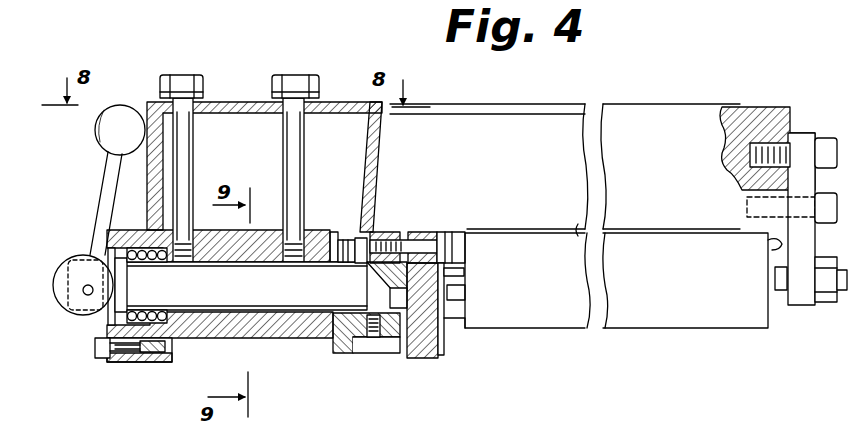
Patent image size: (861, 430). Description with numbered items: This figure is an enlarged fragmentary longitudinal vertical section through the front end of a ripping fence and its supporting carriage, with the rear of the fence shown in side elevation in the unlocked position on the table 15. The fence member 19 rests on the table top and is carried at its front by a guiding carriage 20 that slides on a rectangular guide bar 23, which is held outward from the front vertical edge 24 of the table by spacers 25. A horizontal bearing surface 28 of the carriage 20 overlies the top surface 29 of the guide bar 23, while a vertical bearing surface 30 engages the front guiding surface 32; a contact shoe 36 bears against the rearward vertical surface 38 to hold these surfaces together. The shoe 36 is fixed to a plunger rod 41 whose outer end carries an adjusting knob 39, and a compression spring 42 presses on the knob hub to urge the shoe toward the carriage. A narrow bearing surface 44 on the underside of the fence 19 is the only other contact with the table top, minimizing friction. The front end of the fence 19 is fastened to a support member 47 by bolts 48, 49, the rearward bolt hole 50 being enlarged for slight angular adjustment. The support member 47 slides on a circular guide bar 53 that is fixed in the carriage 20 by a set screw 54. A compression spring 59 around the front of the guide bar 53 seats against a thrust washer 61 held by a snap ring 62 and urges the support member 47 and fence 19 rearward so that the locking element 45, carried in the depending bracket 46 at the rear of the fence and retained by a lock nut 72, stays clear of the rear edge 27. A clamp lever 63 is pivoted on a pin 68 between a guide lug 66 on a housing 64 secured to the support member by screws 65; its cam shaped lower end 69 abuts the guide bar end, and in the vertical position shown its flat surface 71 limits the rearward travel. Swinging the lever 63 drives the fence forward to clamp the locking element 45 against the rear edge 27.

The table 15 is at (641, 326).
The fence member 19 is at (540, 106).
The guiding carriage 20 is at (350, 236).
The guide bar 23 is at (426, 358).
The front vertical edge 24 is at (462, 320).
The spacers 25 is at (465, 293).
The rear edge 27 is at (770, 244).
The horizontal bearing surface 28 is at (450, 272).
The top surface 29 is at (376, 283).
The vertical bearing surface 30 is at (396, 280).
The front guiding surface 32 is at (400, 342).
The contact shoe 36 is at (446, 234).
The rearward vertical surface 38 is at (444, 345).
The adjusting knob 39 is at (346, 265).
The plunger rod 41 is at (411, 240).
The compression spring 42 is at (385, 240).
The bearing surface 44 is at (578, 232).
The locking element 45 is at (780, 292).
The depending bracket 46 is at (818, 180).
The support member 47 is at (224, 325).
The bolt 48 is at (186, 128).
The bolt 49 is at (290, 152).
The rearward bolt hole 50 is at (312, 122).
The circular guide bar 53 is at (236, 277).
The set screw 54 is at (372, 333).
The compression spring 59 is at (150, 312).
The thrust washer 61 is at (136, 232).
The snap ring 62 is at (130, 312).
The clamp lever 63 is at (112, 170).
The housing 64 is at (112, 352).
The screws 65 is at (146, 360).
The guide lug 66 is at (72, 270).
The pin 68 is at (82, 290).
The cam shaped lower end 69 is at (62, 300).
The flat surface 71 is at (126, 282).
The lock nut 72 is at (832, 304).